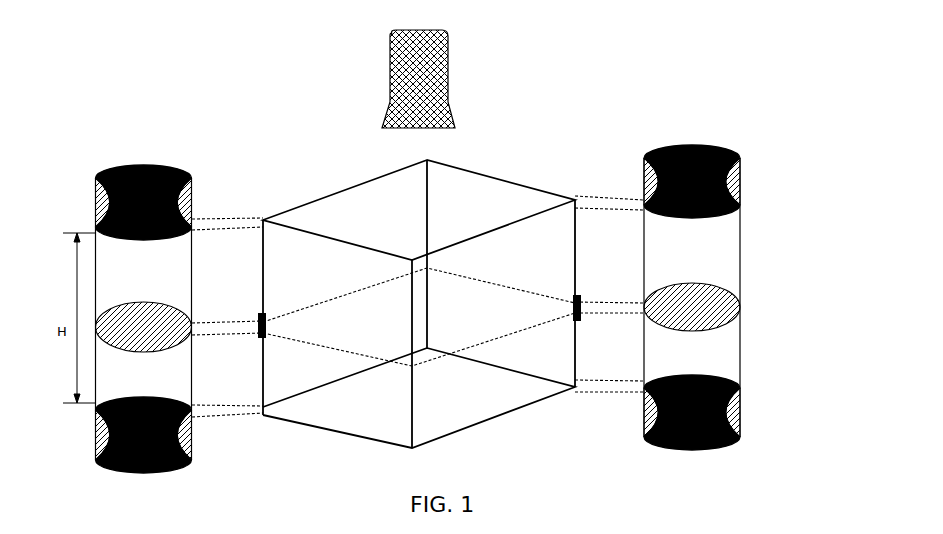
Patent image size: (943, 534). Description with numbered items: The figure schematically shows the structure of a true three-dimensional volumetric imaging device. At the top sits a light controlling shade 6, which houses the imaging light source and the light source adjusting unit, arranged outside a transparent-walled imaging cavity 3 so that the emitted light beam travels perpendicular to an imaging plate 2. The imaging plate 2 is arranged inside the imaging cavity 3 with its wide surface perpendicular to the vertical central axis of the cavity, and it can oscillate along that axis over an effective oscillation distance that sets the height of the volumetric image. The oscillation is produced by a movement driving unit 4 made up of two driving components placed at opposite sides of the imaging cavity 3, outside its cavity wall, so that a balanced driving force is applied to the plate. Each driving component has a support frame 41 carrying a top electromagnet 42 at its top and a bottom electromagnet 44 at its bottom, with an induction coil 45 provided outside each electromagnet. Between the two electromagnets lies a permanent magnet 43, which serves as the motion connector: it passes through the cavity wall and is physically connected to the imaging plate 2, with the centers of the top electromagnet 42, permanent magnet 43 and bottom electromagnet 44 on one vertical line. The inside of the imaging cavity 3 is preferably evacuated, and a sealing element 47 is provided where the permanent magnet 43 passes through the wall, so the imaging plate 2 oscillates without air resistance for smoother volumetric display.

The imaging plate 2 is at (488, 297).
The imaging cavity 3 is at (478, 188).
The movement driving unit 4 is at (59, 183).
The light controlling shade 6 is at (446, 36).
The support frame 41 is at (741, 250).
The top electromagnet 42 is at (718, 146).
The permanent magnet 43 is at (742, 287).
The bottom electromagnet 44 is at (737, 428).
The induction coil 45 is at (733, 181).
The sealing element 47 is at (256, 316).